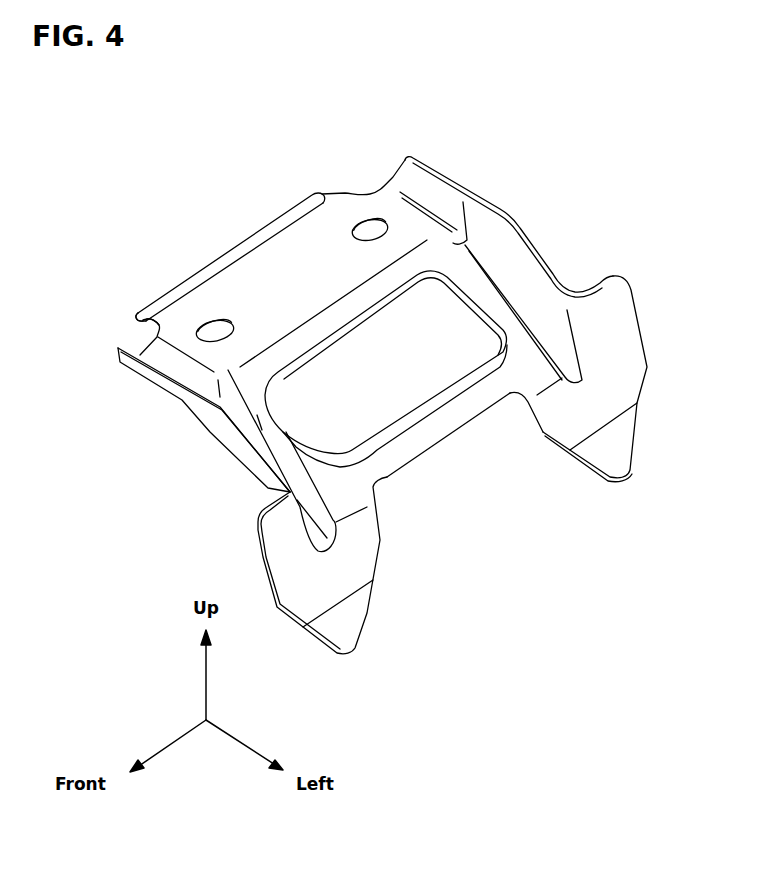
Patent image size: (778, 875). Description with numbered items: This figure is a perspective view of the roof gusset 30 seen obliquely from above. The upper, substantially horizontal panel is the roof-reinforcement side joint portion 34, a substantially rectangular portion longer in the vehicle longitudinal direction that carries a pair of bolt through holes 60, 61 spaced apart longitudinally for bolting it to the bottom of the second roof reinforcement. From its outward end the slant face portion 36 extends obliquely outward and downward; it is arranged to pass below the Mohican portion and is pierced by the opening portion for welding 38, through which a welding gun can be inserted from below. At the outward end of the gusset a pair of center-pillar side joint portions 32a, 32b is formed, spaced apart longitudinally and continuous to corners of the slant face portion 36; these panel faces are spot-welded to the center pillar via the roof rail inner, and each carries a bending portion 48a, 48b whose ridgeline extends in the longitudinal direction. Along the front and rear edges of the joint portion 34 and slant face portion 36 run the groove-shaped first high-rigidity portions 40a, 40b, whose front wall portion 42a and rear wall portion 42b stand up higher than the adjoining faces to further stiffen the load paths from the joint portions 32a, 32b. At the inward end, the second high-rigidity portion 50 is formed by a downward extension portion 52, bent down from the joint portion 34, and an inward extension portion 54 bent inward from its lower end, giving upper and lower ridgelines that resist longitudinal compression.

The roof gusset 30 is at (568, 117).
The front-side center-pillar side joint portion 32a is at (353, 563).
The rear-side center-pillar side joint portion 32b is at (627, 340).
The roof-reinforcement side joint portion 34 is at (258, 261).
The slant face portion 36 is at (423, 436).
The opening portion for welding 38 is at (338, 330).
The front-side first high-rigidity portion 40a is at (228, 434).
The rear-side first high-rigidity portion 40b is at (487, 247).
The front wall portion 42a is at (227, 435).
The rear wall portion 42b is at (530, 237).
The bending portion 48a is at (355, 609).
The bending portion 48b is at (604, 428).
The second high-rigidity portion 50 is at (283, 210).
The downward extension portion 52 is at (140, 312).
The inward extension portion 54 is at (137, 320).
The bolt through hole 60 is at (209, 322).
The bolt through hole 61 is at (362, 220).